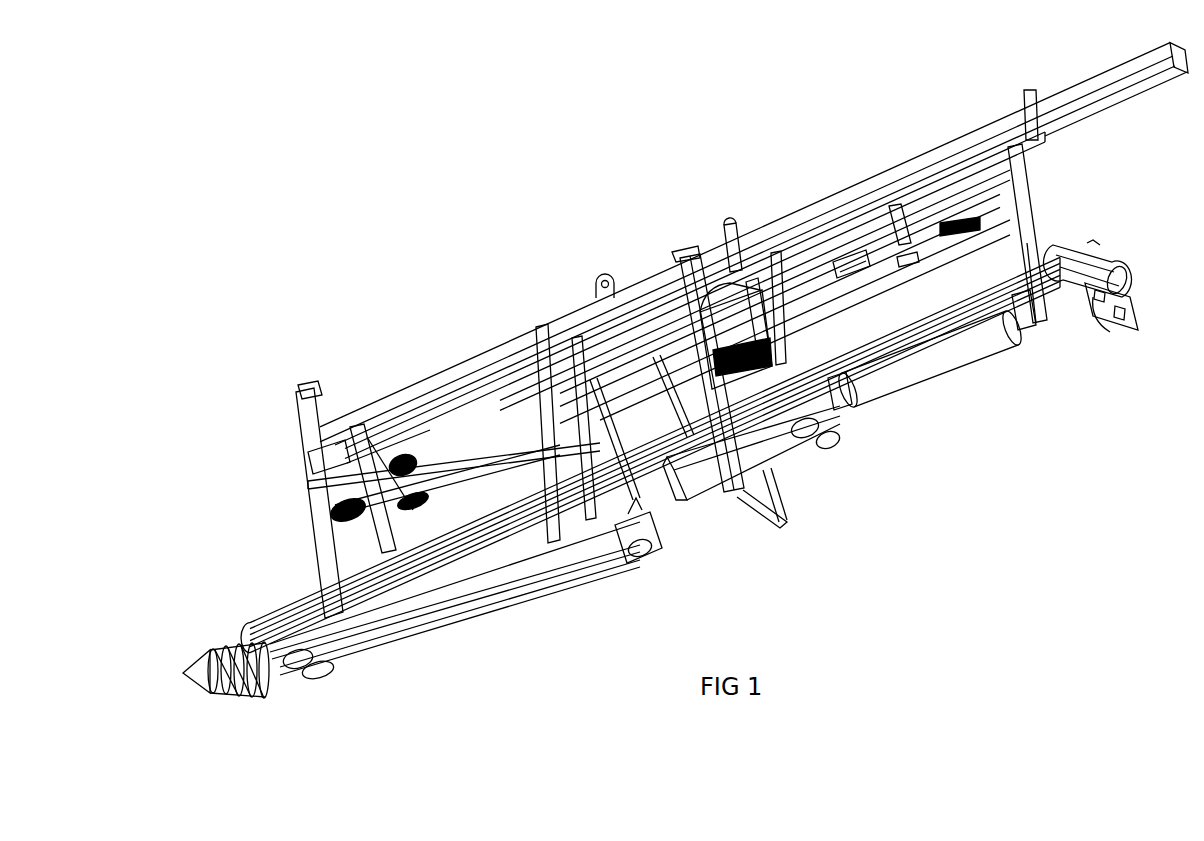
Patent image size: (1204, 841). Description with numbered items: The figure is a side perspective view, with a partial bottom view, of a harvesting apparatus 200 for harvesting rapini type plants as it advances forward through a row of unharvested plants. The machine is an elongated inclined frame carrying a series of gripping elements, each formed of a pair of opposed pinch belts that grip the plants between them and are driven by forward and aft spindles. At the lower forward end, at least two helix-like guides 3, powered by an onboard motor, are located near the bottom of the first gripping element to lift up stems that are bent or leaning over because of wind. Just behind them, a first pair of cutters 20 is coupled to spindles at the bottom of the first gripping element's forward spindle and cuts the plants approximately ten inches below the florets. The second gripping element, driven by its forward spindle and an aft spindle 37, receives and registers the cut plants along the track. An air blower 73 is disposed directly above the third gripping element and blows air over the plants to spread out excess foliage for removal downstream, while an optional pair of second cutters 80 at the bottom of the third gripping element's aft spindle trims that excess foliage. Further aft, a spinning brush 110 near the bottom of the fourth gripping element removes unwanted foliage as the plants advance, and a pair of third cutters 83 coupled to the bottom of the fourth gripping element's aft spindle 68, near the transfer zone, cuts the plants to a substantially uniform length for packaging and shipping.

The harvesting apparatus 200 is at (767, 126).
The air blower 73 is at (700, 290).
The aft spindle 37 is at (660, 530).
The first pair of cutters 20 is at (323, 677).
The helix-like guides 3 is at (243, 680).
The pair of second cutters 80 is at (833, 433).
The spinning brush 110 is at (952, 353).
The aft spindle 68 is at (1117, 270).
The pair of third cutters 83 is at (1127, 288).